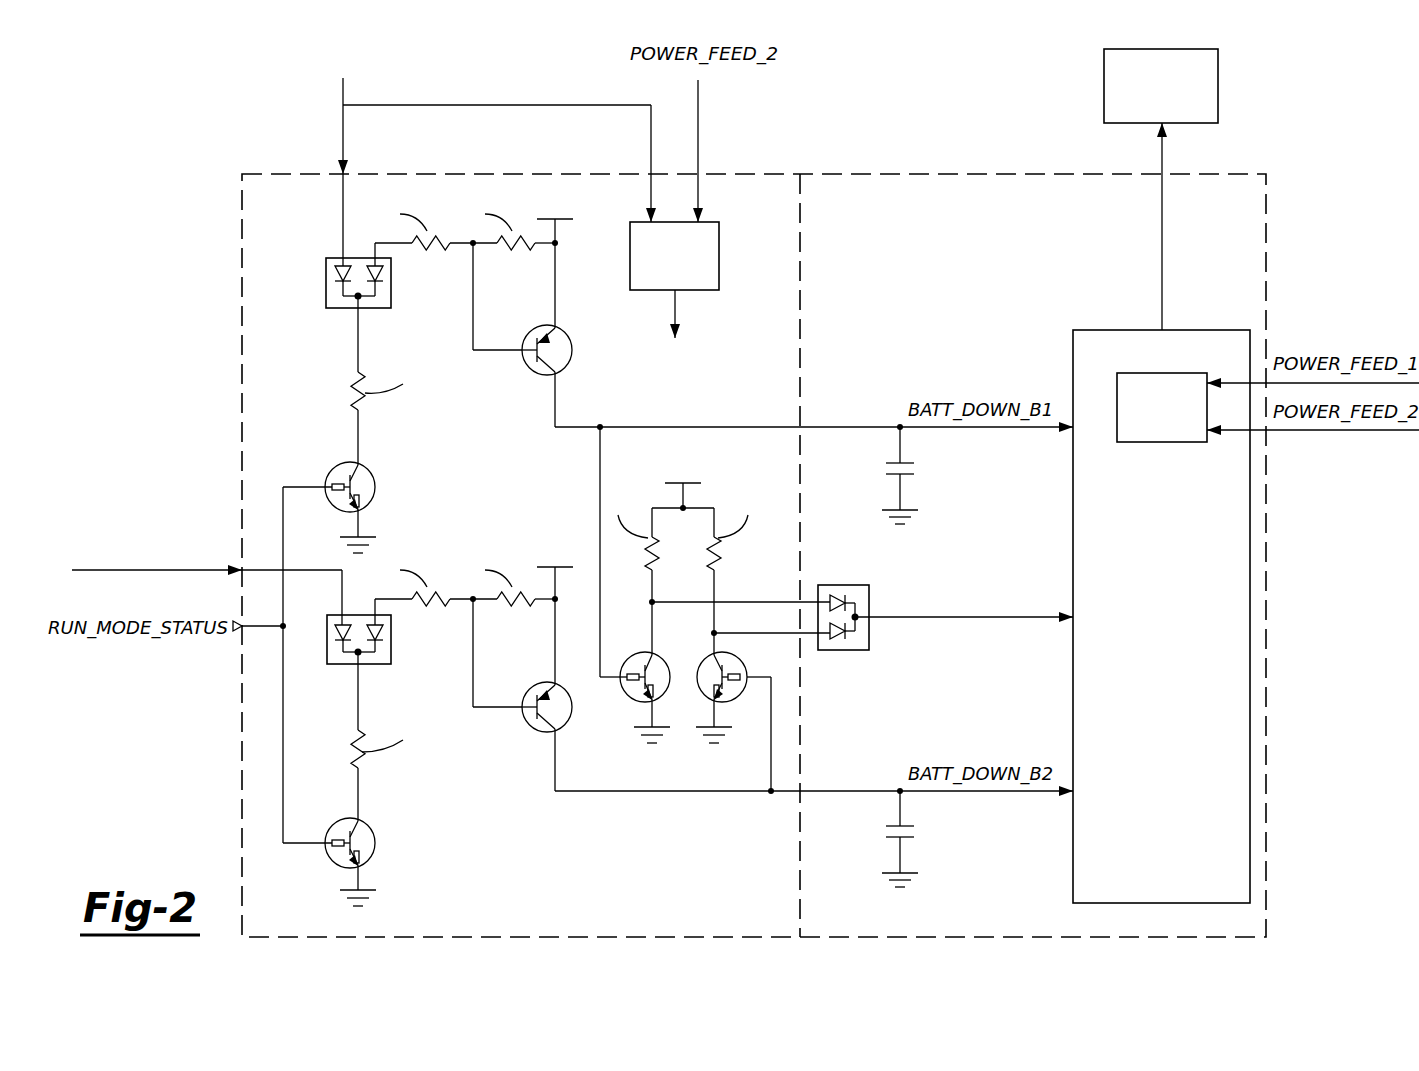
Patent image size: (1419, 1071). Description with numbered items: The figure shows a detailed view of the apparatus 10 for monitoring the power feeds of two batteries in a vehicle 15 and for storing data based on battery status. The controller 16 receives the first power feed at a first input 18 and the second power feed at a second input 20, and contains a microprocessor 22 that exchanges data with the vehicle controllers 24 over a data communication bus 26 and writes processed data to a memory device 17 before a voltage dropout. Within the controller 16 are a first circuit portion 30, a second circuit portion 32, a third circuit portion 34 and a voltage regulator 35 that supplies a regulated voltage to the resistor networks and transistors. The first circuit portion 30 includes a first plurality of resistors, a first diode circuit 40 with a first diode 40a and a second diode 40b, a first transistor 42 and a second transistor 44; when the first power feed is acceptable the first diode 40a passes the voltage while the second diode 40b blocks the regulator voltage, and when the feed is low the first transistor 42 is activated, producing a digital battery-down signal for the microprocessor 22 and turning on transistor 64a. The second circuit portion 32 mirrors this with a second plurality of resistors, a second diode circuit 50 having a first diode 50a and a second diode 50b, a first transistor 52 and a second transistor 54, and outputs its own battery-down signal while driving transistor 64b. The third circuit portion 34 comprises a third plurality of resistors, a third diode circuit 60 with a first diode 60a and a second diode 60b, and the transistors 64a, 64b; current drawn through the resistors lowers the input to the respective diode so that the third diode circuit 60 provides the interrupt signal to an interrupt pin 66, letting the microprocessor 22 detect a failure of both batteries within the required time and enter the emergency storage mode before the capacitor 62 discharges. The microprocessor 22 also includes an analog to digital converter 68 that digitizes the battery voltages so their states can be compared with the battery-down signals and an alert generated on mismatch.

The apparatus 10 is at (905, 108).
The vehicle 15 is at (757, 114).
The controller 16 is at (858, 174).
The memory device 17 is at (1056, 268).
The first input 18 is at (350, 170).
The second input 20 is at (240, 567).
The microprocessor 22 is at (1073, 348).
The vehicle controllers 24 is at (1104, 88).
The data communication bus 26 is at (1162, 257).
The first circuit portion 30 is at (625, 355).
The second circuit portion 32 is at (680, 838).
The third circuit portion 34 is at (825, 540).
The voltage regulator 35 is at (719, 253).
The first diode circuit 40 is at (354, 254).
The first diode 40a is at (343, 290).
The second diode 40b is at (375, 290).
The first transistor 42 is at (530, 368).
The second transistor 44 is at (368, 467).
The second diode circuit 50 is at (379, 672).
The first diode 50a is at (340, 648).
The second diode 50b is at (380, 648).
The first transistor 52 is at (530, 725).
The second transistor 54 is at (370, 825).
The third diode circuit 60 is at (882, 617).
The first diode 60a is at (836, 587).
The second diode 60b is at (840, 652).
The capacitor 62 is at (1170, 760).
The transistor 64a is at (625, 697).
The transistor 64b is at (702, 657).
The interrupt pin 66 is at (1073, 617).
The analog to digital converter 68 is at (1160, 442).